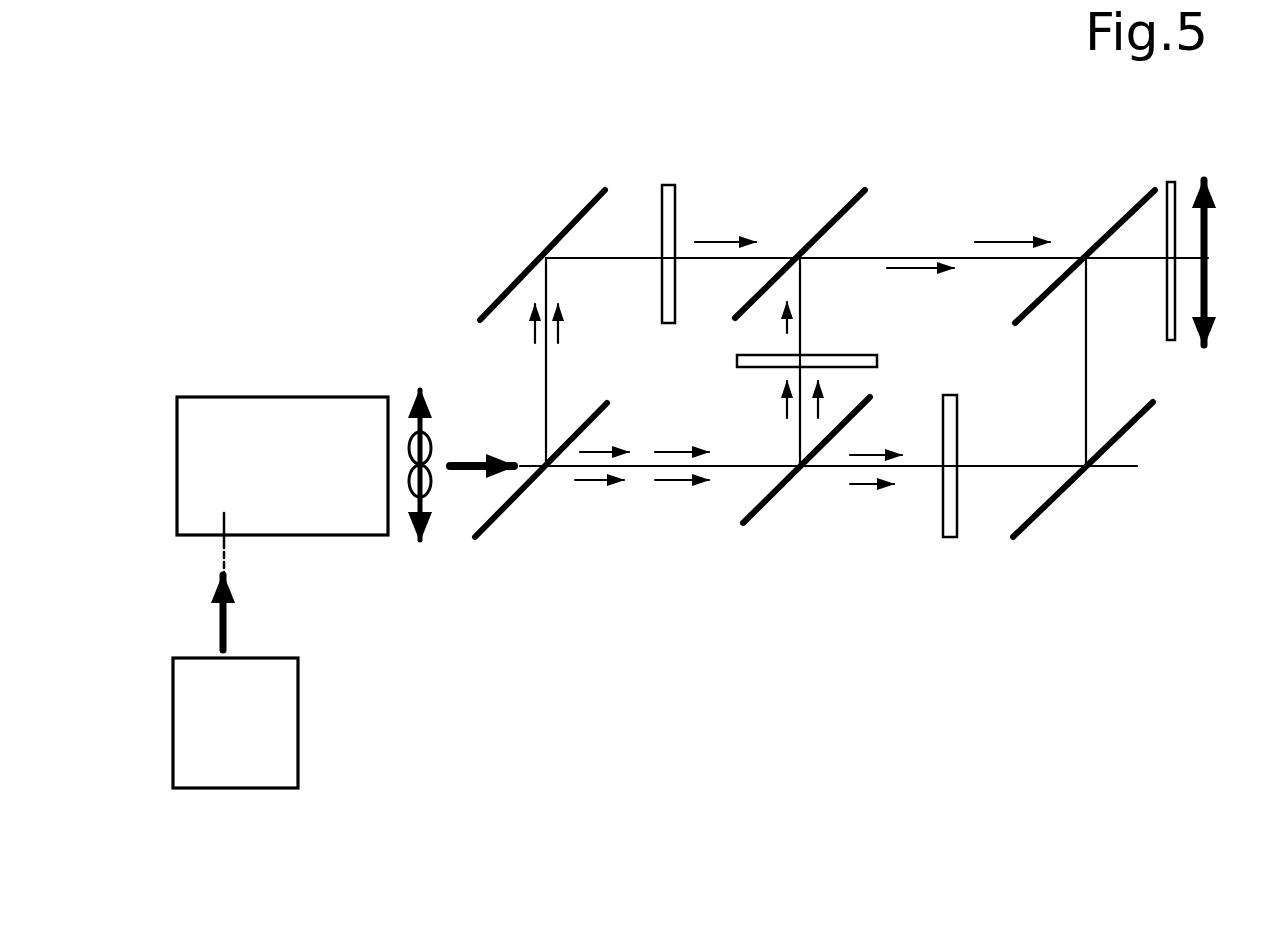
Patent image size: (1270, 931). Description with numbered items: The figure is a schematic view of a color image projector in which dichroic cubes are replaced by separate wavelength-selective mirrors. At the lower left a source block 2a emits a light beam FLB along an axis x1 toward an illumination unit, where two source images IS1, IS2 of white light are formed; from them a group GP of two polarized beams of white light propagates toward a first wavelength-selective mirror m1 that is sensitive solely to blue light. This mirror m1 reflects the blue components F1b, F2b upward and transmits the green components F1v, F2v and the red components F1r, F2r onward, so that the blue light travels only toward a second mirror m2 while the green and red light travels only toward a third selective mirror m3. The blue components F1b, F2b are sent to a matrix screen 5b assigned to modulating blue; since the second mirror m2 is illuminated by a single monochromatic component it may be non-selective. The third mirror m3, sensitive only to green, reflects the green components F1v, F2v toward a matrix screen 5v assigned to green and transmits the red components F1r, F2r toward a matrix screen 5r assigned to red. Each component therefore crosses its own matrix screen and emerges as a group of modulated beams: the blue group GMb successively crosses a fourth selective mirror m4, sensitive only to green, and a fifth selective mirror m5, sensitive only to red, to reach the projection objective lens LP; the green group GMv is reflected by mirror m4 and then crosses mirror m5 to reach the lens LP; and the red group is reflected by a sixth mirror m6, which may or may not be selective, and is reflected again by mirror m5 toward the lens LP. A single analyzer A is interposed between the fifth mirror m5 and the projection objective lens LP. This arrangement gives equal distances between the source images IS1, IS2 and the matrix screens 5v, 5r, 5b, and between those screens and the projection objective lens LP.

The light source 2a is at (256, 788).
The optical axis x1 is at (218, 562).
The light beam FLB is at (218, 620).
The source image IS1 is at (414, 510).
The source image IS2 is at (432, 450).
The group of two polarized beams GP is at (478, 469).
The first wavelength-selective mirror m1 is at (512, 518).
The second mirror m2 is at (559, 218).
The matrix screen 5b is at (671, 184).
The group of modulated beams GMb is at (722, 234).
The fourth selective mirror m4 is at (836, 206).
The group of modulated beams GMv is at (920, 270).
The matrix screen 5v is at (827, 354).
The blue component F1b is at (533, 333).
The blue component F2b is at (560, 335).
The green component F1v is at (786, 418).
The green component F2v is at (824, 412).
The red component F1r is at (670, 450).
The red component F2r is at (672, 484).
The third selective mirror m3 is at (782, 500).
The matrix screen 5r is at (955, 537).
The fifth selective mirror m5 is at (1121, 206).
The analyzer A is at (1170, 182).
The projection objective lens LP is at (1210, 181).
The sixth mirror m6 is at (1050, 500).